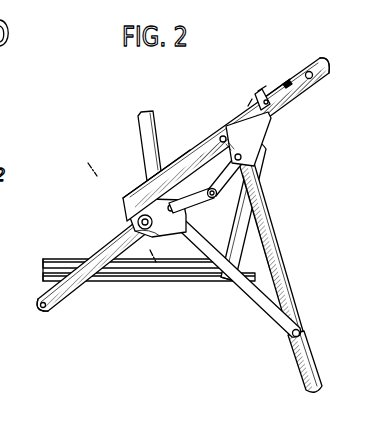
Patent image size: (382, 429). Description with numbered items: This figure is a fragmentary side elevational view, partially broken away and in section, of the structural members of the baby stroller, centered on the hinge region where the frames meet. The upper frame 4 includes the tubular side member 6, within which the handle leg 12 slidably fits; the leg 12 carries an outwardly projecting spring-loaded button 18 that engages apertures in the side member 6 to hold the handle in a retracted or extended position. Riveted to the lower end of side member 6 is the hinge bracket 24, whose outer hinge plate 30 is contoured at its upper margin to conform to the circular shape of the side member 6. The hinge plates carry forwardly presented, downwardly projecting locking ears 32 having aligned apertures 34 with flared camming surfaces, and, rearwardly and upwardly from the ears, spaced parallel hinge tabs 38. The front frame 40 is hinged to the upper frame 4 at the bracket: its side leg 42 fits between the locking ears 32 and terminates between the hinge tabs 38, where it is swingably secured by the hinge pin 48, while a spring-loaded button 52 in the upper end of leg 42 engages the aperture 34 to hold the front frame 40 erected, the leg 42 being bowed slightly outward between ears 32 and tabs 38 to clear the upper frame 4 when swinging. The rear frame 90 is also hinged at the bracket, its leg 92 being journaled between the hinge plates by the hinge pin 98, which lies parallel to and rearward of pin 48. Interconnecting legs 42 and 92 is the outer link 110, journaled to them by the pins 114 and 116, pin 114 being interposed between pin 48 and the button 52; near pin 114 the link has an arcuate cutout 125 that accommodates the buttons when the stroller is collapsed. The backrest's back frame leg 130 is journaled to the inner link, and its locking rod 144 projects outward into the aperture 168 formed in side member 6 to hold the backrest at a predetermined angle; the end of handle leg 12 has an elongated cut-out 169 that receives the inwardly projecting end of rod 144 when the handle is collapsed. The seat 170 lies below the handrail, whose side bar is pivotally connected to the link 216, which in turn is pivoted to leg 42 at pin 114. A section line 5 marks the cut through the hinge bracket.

The upper frame 4 is at (268, 71).
The section line 5- 5 is at (102, 190).
The tubular side member 6 is at (255, 105).
The handle leg 12 is at (318, 62).
The spring-loaded button 18 is at (314, 75).
The hinge bracket 24 is at (139, 185).
The outer hinge plate 30 is at (206, 152).
The locking ear 32 is at (187, 276).
The aperture 34 is at (123, 228).
The hinge tab 38 is at (225, 170).
The front frame 40 is at (42, 310).
The side leg 42 is at (41, 292).
The hinge pin 48 is at (218, 193).
The spring-loaded button 52 is at (133, 209).
The rear frame 90 is at (292, 369).
The rear frame leg 92 is at (289, 278).
The hinge pin 98 is at (245, 139).
The outer link 110 is at (268, 320).
The pin 114 is at (183, 221).
The pin 116 is at (301, 333).
The arcuate cutout 125 is at (219, 283).
The back frame leg 130 is at (256, 237).
The locking rod 144 is at (290, 106).
The aperture 168 is at (260, 89).
The elongated cut-out 169 is at (255, 93).
The seat 170 is at (146, 281).
The link 216 is at (138, 118).